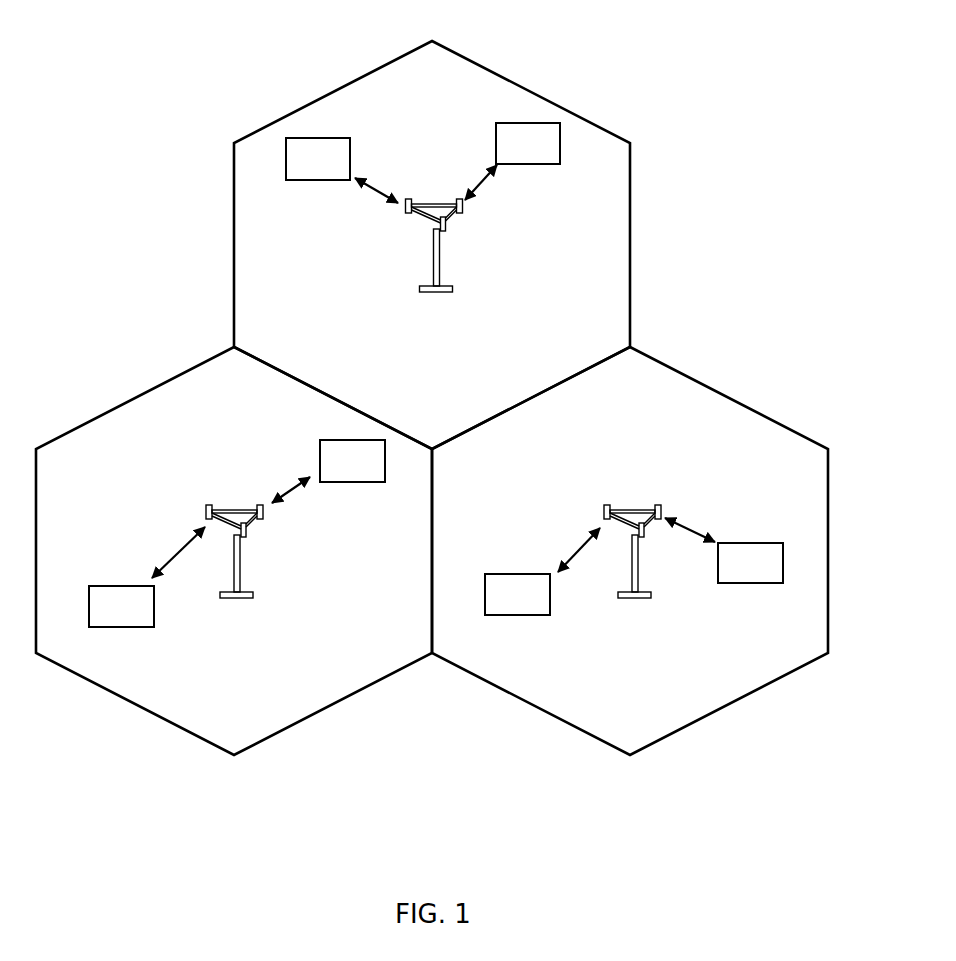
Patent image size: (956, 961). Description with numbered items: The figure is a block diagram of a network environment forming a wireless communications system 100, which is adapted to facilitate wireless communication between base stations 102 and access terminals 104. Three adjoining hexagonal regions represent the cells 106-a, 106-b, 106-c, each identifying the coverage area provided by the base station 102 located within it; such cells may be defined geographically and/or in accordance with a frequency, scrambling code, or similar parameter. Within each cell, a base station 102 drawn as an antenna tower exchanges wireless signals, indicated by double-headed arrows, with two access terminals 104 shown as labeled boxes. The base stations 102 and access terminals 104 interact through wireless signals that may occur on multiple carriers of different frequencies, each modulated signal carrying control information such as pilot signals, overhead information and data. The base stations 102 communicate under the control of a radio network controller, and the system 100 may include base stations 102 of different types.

The wireless communications system 100 is at (768, 84).
The base station 102 is at (437, 205).
The access terminal 104 is at (308, 180).
The cell 106-a is at (113, 408).
The cell 106-b is at (513, 81).
The cell 106-c is at (728, 397).